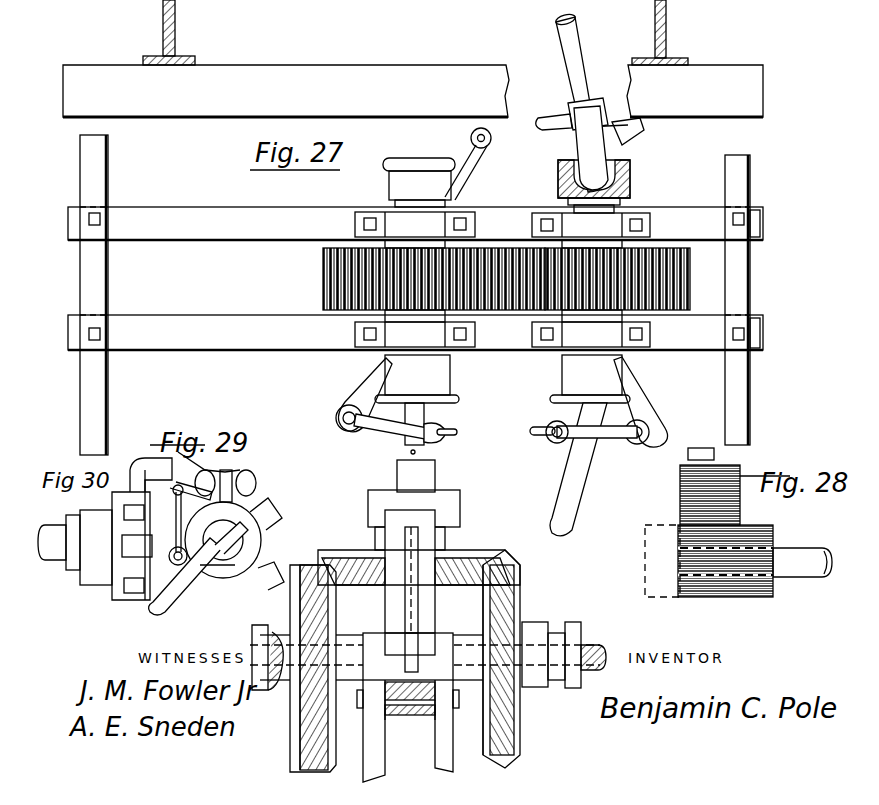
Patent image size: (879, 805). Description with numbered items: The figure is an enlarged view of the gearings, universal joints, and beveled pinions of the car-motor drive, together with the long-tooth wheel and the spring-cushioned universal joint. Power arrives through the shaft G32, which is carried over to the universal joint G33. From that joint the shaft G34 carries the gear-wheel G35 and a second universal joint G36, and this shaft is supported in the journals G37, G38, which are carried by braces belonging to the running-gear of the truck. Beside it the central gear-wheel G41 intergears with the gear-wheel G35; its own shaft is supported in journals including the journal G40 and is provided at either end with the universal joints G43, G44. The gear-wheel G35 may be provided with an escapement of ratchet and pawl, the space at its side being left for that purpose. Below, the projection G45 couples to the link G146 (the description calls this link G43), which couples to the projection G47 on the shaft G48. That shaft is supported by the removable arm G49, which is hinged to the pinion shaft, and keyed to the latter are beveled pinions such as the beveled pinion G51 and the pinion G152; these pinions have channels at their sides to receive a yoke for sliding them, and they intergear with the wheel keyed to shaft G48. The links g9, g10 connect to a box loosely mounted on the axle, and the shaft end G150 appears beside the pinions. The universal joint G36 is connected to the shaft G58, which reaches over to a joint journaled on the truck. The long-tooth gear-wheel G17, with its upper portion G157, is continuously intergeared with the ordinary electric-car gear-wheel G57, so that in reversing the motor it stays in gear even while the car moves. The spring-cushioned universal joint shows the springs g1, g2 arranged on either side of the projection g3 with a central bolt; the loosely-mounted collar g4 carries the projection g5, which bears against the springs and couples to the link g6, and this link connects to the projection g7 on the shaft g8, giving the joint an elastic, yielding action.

In FIG. 27, the shaft G32 is at (578, 58).
In FIG. 27, the universal joint G33 is at (624, 180).
In FIG. 27, the shaft G34 is at (591, 225).
In FIG. 27, the gear-wheel G35 is at (665, 275).
In FIG. 27, the universal joint G36 is at (603, 378).
In FIG. 27, the journal G37 is at (415, 224).
In FIG. 27, the journal G38 is at (415, 334).
In FIG. 27, the journal G40 is at (591, 334).
In FIG. 27, the central gear-wheel G41 is at (345, 270).
In FIG. 27, the universal joint G43 is at (428, 186).
In FIG. 27, the universal joint G44 is at (417, 379).
In FIG. 27, the projection G45 is at (385, 398).
In FIG. 27, the link G146 is at (385, 432).
In FIG. 27, the projection G47 is at (440, 428).
In FIG. 27, the shaft G48 is at (418, 453).
In FIG. 27, the removable arm G49 is at (418, 522).
In FIG. 27, the beveled pinion G51 is at (500, 612).
In FIG. 27, the gear-wheel G57 is at (689, 461).
In FIG. 27, the shaft G58 is at (582, 495).
In FIG. 27, the shaft end G150 is at (592, 657).
In FIG. 28, the shaft end G150 is at (800, 565).
In FIG. 27, the bevel gear G152 is at (306, 728).
In FIG. 28, the upper block G157 is at (705, 483).
In FIG. 28, the long-tooth gear-wheel G17 is at (733, 583).
In FIG. 29, the spring g1 is at (252, 471).
In FIG. 29, the spring g2 is at (200, 475).
In FIG. 29, the projection g3 is at (230, 473).
In FIG. 29, the loosely-mounted collar g4 is at (250, 512).
In FIG. 29, the projection g5 is at (178, 455).
In FIG. 29, the link g6 is at (176, 520).
In FIG. 29, the projection g7 is at (195, 580).
In FIG. 29, the shaft g8 is at (150, 606).
In FIG. 27, the link g9 is at (375, 748).
In FIG. 27, the link g10 is at (448, 745).